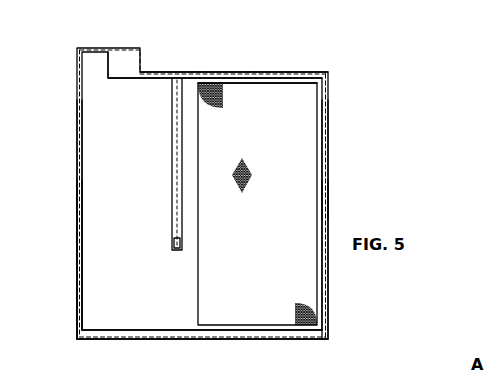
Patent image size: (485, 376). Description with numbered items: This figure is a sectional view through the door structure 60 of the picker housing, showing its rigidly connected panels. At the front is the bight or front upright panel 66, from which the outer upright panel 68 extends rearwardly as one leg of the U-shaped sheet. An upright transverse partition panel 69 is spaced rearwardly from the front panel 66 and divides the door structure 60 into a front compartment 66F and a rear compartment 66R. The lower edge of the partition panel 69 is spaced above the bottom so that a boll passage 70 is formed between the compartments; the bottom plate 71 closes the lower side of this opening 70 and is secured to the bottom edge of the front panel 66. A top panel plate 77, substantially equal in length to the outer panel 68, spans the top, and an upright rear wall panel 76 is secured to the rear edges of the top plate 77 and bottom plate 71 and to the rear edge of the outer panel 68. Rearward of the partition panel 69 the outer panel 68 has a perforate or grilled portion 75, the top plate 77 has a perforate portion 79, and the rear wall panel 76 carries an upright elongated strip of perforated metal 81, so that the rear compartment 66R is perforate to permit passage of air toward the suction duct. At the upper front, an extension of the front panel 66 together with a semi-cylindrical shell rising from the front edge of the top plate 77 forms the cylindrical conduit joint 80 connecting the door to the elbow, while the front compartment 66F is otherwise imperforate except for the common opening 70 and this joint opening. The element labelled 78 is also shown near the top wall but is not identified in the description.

The door structure 60 is at (330, 92).
The front upright panel 66 is at (77, 162).
The front compartment 66F is at (96, 203).
The rear compartment 66R is at (300, 150).
The outer upright panel 68 is at (123, 103).
The partition panel 69 is at (182, 150).
The boll passage 70 is at (175, 283).
The bottom plate 71 is at (190, 341).
The perforate portion of outer panel 75 is at (252, 118).
The rear wall panel 76 is at (330, 158).
The top panel plate 77 is at (221, 73).
The top wall left section 78 is at (163, 72).
The perforate portion of top panel 79 is at (275, 70).
The conduit joint 80 is at (77, 50).
The perforated strip 81 is at (330, 198).